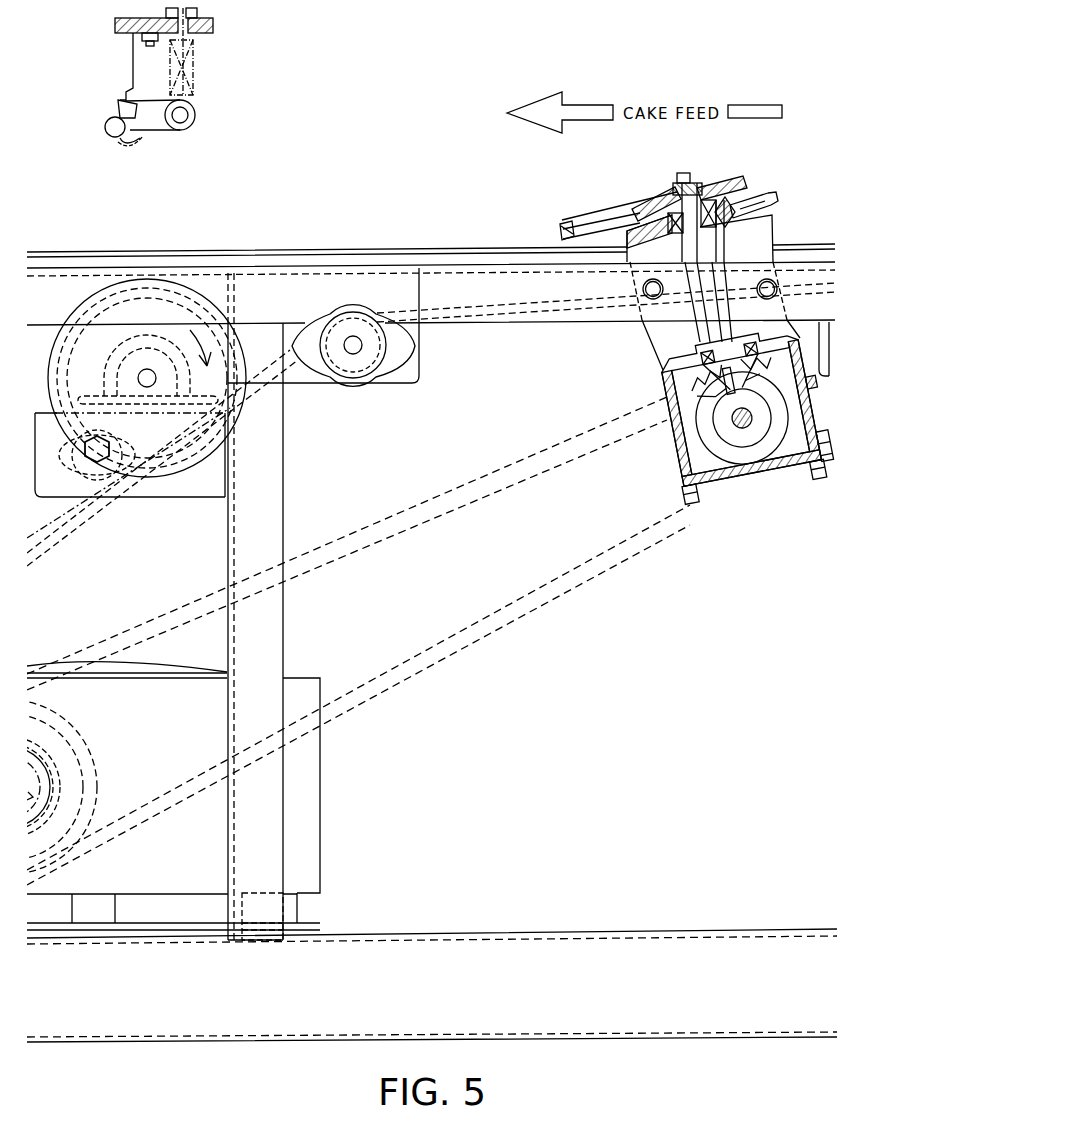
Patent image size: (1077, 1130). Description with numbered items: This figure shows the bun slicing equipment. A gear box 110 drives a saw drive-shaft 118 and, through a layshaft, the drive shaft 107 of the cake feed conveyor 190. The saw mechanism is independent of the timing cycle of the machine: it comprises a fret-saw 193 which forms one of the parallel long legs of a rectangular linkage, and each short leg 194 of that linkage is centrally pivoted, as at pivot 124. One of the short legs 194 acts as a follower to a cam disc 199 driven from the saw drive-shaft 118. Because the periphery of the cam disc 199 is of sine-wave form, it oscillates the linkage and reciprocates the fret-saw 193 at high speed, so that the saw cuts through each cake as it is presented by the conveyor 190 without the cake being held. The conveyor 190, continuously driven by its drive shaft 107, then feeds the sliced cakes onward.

The drive shaft 107 is at (146, 370).
The gear box 110 is at (83, 742).
The saw drive-shaft 118 is at (731, 421).
The pivot 124 is at (636, 184).
The cake feed conveyor 190 is at (231, 251).
The fret-saw 193 is at (562, 221).
The short leg 194 is at (592, 218).
The cam disc 199 is at (737, 185).